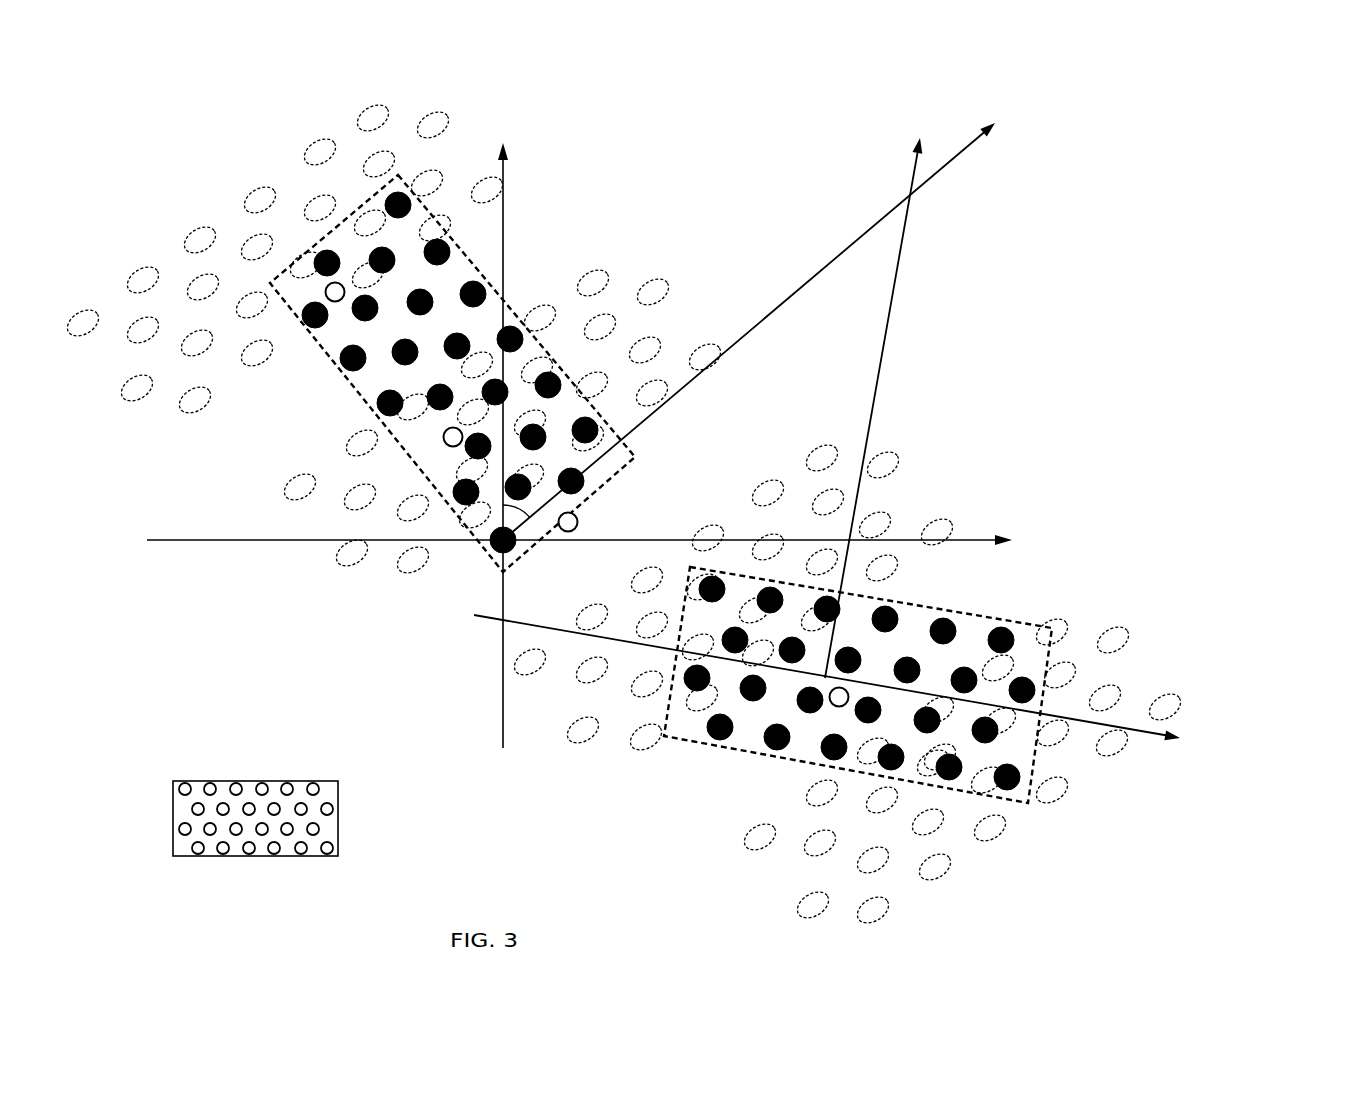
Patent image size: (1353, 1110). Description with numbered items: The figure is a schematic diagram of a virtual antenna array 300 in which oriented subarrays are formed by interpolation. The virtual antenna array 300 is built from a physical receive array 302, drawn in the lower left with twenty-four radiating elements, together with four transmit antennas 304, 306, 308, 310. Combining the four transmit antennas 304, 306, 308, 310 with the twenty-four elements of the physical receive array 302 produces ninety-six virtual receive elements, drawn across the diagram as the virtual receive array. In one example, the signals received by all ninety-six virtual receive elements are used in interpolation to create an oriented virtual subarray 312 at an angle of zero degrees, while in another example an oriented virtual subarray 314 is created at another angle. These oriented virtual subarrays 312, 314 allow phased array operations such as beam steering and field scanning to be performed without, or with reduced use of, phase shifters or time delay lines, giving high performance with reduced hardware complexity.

The virtual antenna array 300 is at (238, 132).
The physical receive array 302 is at (208, 782).
The transmit antenna 304 is at (326, 290).
The transmit antenna 306 is at (452, 447).
The transmit antenna 308 is at (577, 518).
The transmit antenna 310 is at (835, 706).
The oriented virtual subarray 312 is at (548, 350).
The oriented virtual subarray 314 is at (1015, 623).